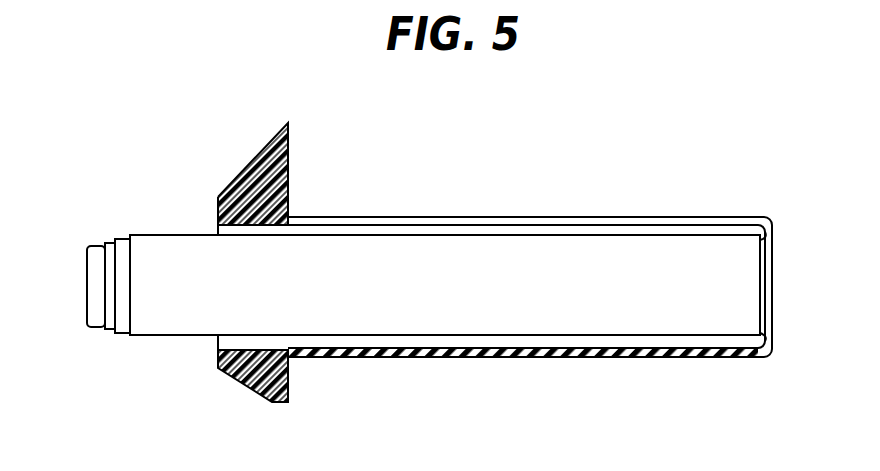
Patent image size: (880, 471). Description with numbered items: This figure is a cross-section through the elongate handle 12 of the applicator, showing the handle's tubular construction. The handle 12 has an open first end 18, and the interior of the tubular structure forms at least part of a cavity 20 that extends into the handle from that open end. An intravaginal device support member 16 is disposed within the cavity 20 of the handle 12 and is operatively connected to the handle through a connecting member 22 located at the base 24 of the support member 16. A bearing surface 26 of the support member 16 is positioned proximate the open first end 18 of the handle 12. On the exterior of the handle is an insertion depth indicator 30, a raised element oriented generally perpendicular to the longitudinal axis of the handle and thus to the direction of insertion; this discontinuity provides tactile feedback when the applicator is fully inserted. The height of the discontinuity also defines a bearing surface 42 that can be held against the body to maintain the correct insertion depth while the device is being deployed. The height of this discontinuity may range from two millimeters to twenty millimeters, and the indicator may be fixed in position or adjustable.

The elongate handle 12 is at (540, 358).
The intravaginal device support member 16 is at (402, 290).
The open first end 18 is at (218, 233).
The cavity 20 is at (248, 344).
The connecting member 22 is at (768, 232).
The base 24 is at (676, 272).
The bearing surface 26 is at (88, 270).
The insertion depth indicator 30 is at (272, 186).
The bearing surface 42 is at (245, 165).